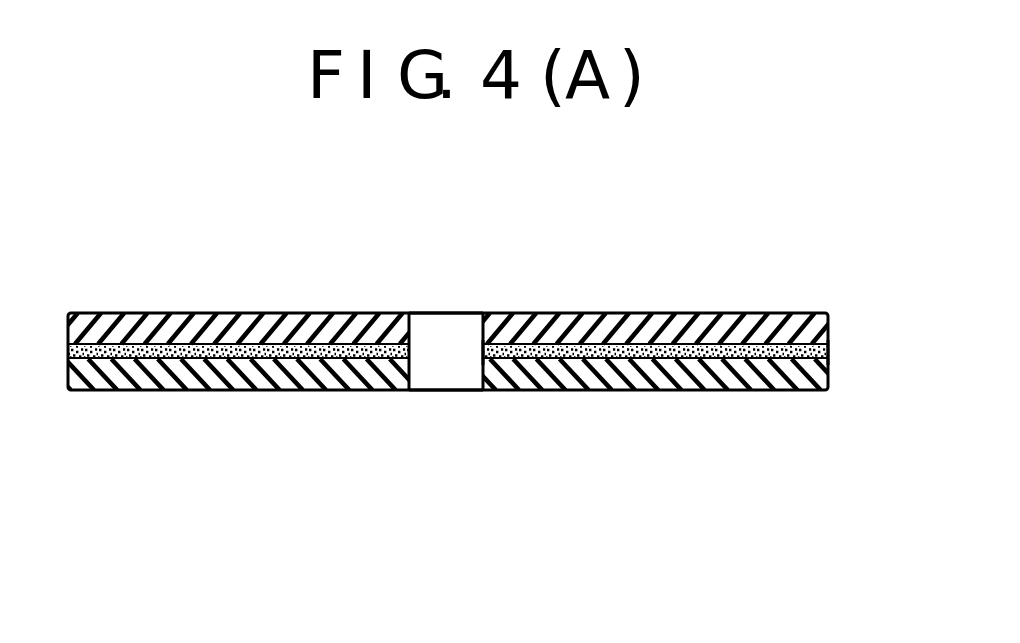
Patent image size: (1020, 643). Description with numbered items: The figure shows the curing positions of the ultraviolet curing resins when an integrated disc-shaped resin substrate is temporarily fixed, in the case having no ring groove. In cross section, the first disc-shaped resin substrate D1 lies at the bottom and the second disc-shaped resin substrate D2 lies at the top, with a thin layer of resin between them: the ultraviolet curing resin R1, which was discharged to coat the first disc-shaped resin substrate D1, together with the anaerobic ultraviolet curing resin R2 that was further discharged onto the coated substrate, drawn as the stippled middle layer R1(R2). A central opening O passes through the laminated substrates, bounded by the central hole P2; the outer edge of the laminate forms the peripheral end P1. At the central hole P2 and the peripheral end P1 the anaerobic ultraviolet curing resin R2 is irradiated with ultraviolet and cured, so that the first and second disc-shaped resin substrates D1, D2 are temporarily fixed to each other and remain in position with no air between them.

The opening O is at (421, 326).
The peripheral end P1 is at (828, 348).
The central hole P2 is at (484, 347).
The ultraviolet curing resin R1 is at (448, 305).
The anaerobic ultraviolet curing resin R2 is at (613, 347).
The first disc-shaped resin substrate D1 is at (777, 367).
The second disc-shaped resin substrate D2 is at (774, 318).